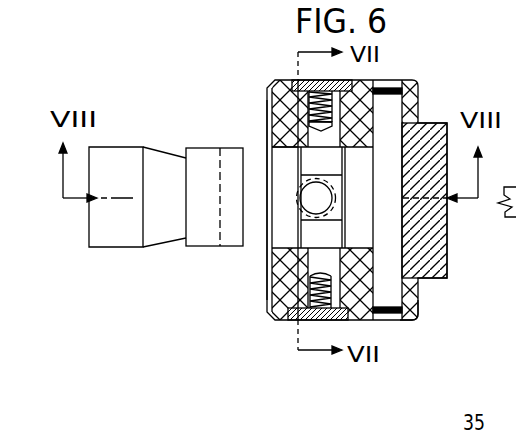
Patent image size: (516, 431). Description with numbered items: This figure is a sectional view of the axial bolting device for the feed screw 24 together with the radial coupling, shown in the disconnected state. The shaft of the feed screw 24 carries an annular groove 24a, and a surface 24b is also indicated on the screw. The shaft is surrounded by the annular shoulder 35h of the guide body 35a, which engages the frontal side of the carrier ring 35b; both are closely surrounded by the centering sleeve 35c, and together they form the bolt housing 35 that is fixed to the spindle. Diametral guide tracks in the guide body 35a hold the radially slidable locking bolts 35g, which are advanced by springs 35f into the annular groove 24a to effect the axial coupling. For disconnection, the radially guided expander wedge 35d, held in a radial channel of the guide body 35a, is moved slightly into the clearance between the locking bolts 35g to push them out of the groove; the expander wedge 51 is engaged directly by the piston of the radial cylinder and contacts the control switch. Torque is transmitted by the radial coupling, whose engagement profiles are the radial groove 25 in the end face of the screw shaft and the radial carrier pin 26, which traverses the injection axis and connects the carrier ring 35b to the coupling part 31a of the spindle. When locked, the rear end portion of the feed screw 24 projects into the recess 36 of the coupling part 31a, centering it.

The feed screw 24 is at (115, 137).
The annular groove 24a is at (162, 177).
The lower tapered surface 24b is at (185, 238).
The radial groove 25 is at (228, 170).
The carrier pin 26 is at (393, 115).
The coupling part of the spindle 31a is at (420, 257).
The bolt housing 35 is at (417, 370).
The guide body 35a is at (276, 287).
The carrier ring 35b is at (408, 307).
The centering sleeve 35c is at (312, 317).
The expander wedge 35d is at (313, 203).
The spring 35f is at (306, 100).
The locking bolt 35g is at (314, 131).
The annular shoulder 35h is at (282, 156).
The recess 36 is at (352, 228).
The expander wedge 51 is at (512, 217).